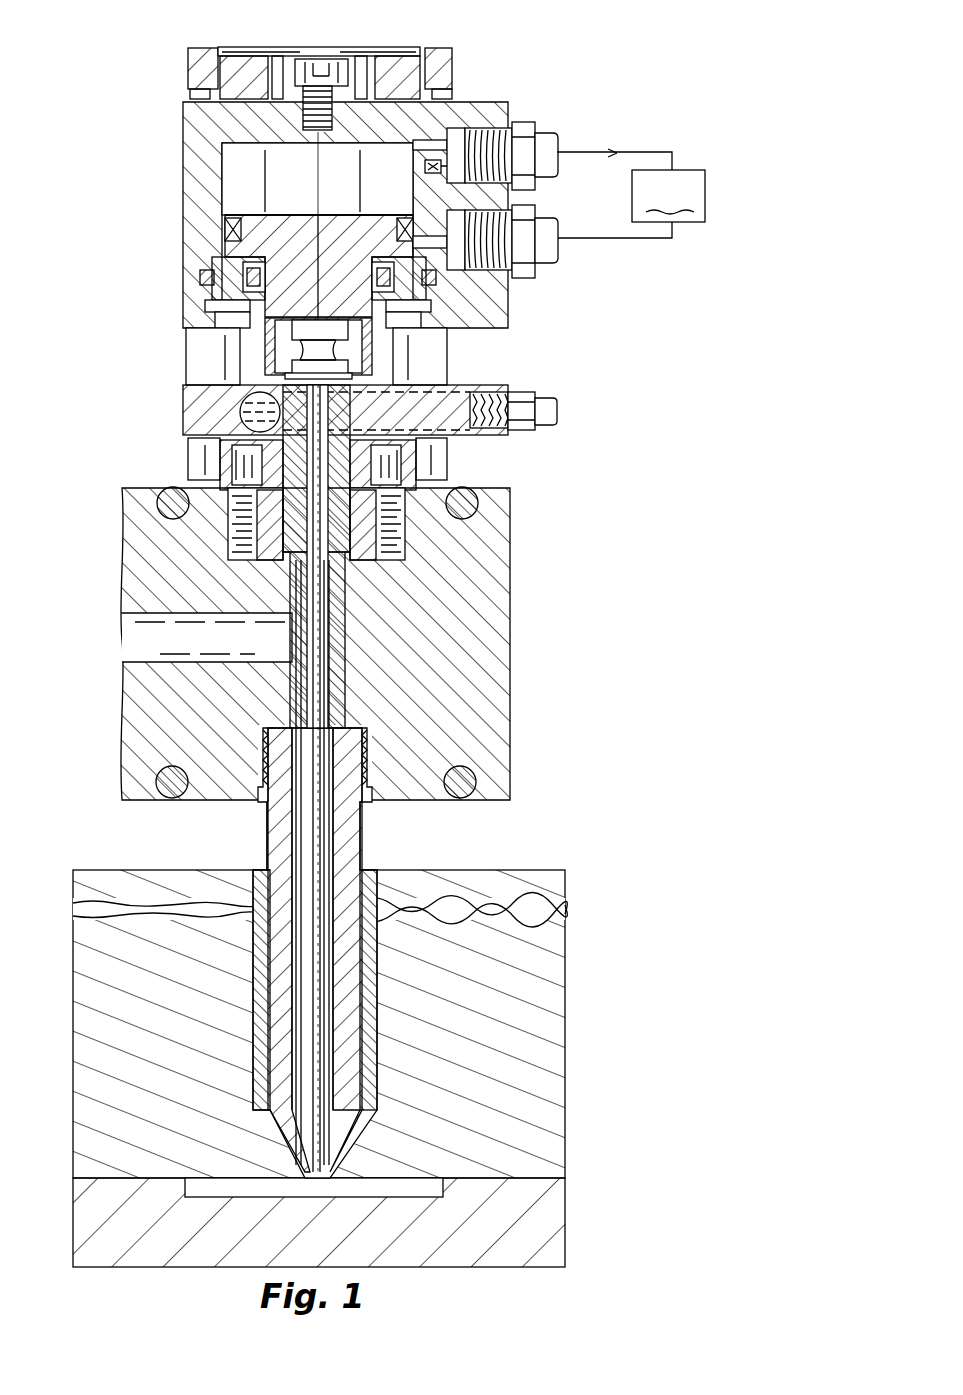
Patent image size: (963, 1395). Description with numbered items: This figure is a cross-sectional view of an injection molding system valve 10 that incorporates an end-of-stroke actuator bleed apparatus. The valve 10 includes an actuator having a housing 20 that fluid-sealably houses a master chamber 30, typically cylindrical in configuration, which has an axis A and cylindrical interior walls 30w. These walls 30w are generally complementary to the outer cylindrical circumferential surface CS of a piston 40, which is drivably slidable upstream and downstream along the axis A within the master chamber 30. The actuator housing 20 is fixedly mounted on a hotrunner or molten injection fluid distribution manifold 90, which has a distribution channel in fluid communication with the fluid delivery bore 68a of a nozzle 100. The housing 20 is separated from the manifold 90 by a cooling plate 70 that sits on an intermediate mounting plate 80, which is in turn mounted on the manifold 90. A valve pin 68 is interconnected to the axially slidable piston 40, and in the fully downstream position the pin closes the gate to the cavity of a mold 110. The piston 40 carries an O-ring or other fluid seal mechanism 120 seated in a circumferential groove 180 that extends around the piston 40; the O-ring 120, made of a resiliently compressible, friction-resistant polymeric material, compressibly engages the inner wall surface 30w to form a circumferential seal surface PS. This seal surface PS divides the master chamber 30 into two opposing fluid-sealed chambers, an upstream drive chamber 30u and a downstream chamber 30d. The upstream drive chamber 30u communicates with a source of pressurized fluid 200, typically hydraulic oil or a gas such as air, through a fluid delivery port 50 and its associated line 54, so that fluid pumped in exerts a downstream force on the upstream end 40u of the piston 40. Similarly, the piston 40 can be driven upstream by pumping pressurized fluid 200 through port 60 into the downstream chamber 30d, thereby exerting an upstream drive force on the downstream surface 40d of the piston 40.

The injection molding system valve 10 is at (108, 186).
The actuator housing 20 is at (183, 178).
The master chamber 30 is at (224, 142).
The upstream drive chamber 30u is at (392, 146).
The downstream chamber 30d is at (430, 268).
The cylindrical interior walls 30w is at (418, 191).
The piston 40 is at (309, 213).
The upstream end of piston 40u is at (368, 214).
The downstream surface of piston 40d is at (397, 266).
The fluid delivery port 50 is at (455, 138).
The fluid line 54 is at (557, 152).
The fluid port 60 is at (457, 267).
The valve pin 68 is at (323, 472).
The fluid delivery bore 68a is at (335, 678).
The cooling plate 70 is at (183, 412).
The intermediate mounting plate 80 is at (188, 455).
The manifold 90 is at (510, 560).
The nozzle 100 is at (362, 841).
The mold 110 is at (565, 1200).
The O-ring fluid seal mechanism 120 is at (227, 233).
The circumferential groove 180 is at (232, 214).
The source of pressurized fluid 200 is at (668, 196).
The circumferential seal surface PS is at (228, 246).
The outer cylindrical circumferential surface CS is at (230, 257).
The axis A is at (320, 208).